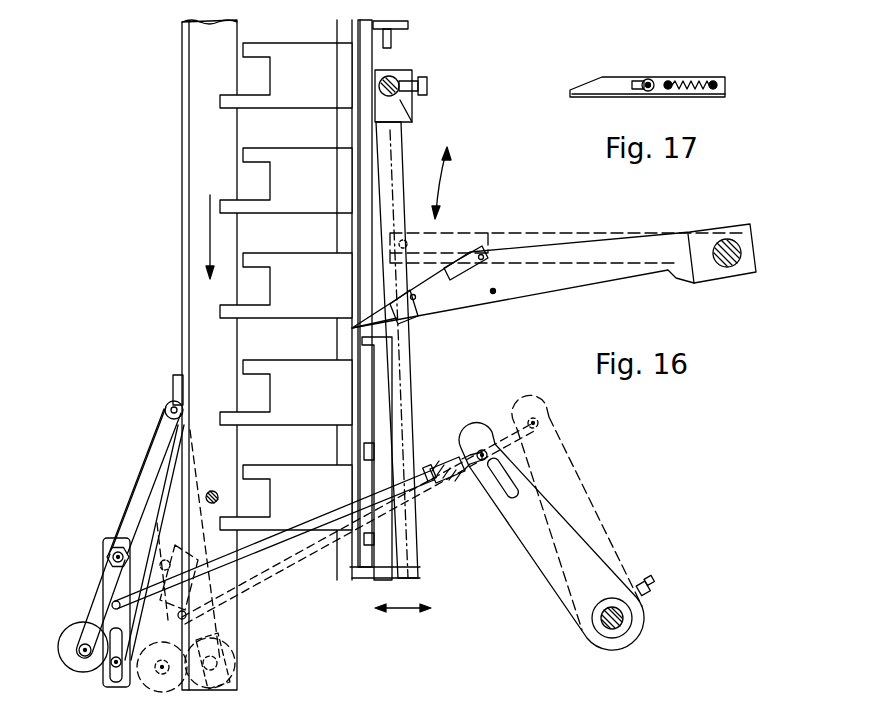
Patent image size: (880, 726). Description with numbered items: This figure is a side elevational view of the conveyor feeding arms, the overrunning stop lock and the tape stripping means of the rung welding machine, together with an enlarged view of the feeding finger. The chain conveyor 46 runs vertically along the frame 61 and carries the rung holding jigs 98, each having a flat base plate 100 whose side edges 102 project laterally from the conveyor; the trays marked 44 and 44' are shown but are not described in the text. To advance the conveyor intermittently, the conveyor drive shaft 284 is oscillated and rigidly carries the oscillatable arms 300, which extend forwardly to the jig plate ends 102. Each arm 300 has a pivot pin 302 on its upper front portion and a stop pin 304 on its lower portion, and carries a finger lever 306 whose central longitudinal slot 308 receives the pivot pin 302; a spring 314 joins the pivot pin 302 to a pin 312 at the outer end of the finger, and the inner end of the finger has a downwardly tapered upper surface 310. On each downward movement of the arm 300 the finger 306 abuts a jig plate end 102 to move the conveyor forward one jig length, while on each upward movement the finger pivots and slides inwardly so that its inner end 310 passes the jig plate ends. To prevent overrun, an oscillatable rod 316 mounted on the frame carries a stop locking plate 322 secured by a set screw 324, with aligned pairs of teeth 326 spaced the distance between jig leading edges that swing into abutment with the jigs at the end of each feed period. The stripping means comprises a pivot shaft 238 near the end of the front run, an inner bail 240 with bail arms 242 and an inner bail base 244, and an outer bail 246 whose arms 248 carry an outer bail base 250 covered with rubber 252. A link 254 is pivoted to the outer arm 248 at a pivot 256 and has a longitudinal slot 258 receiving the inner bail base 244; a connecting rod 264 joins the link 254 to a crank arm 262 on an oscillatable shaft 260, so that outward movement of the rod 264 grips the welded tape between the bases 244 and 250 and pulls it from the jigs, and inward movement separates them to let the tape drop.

In FIG. 16, the tray 44 is at (275, 141).
In FIG. 16, the tray 44' is at (286, 63).
In FIG. 16, the chain conveyor 46 is at (372, 62).
In FIG. 16, the frame 61 is at (182, 131).
In FIG. 16, the rung holding jig 98 is at (312, 102).
In FIG. 16, the flat base plate 100 is at (352, 192).
In FIG. 16, the side edge 102 is at (352, 279).
In FIG. 16, the pivot shaft 238 is at (168, 402).
In FIG. 16, the inner bail 240 is at (157, 527).
In FIG. 16, the bail arm 242 is at (165, 480).
In FIG. 16, the inner bail base 244 is at (132, 672).
In FIG. 16, the outer bail 246 is at (128, 515).
In FIG. 16, the outer bail arm 248 is at (141, 470).
In FIG. 16, the outer bail base 250 is at (80, 660).
In FIG. 16, the rubber 252 is at (73, 630).
In FIG. 16, the link 254 is at (105, 582).
In FIG. 16, the pivot 256 is at (113, 557).
In FIG. 16, the longitudinal slot 258 is at (110, 676).
In FIG. 16, the oscillatable shaft 260 is at (625, 617).
In FIG. 16, the crank arm 262 is at (522, 540).
In FIG. 16, the connecting rod 264 is at (318, 548).
In FIG. 16, the conveyor drive shaft 284 is at (752, 247).
In FIG. 16, the oscillatable arm 300 is at (576, 280).
In FIG. 16, the pivot pin 302 is at (415, 300).
In FIG. 17, the pivot pin 302 is at (649, 91).
In FIG. 16, the stop pin 304 is at (494, 294).
In FIG. 16, the finger lever 306 is at (447, 268).
In FIG. 17, the finger lever 306 is at (617, 76).
In FIG. 17, the central longitudinal slot 308 is at (647, 79).
In FIG. 16, the downwardly tapered upper surface 310 is at (362, 318).
In FIG. 17, the downwardly tapered upper surface 310 is at (582, 84).
In FIG. 17, the pin 312 is at (725, 84).
In FIG. 17, the spring 314 is at (693, 82).
In FIG. 16, the oscillatable rod 316 is at (395, 72).
In FIG. 16, the stop locking plate 322 is at (392, 151).
In FIG. 16, the set screw 324 is at (428, 86).
In FIG. 16, the teeth 326 is at (378, 340).